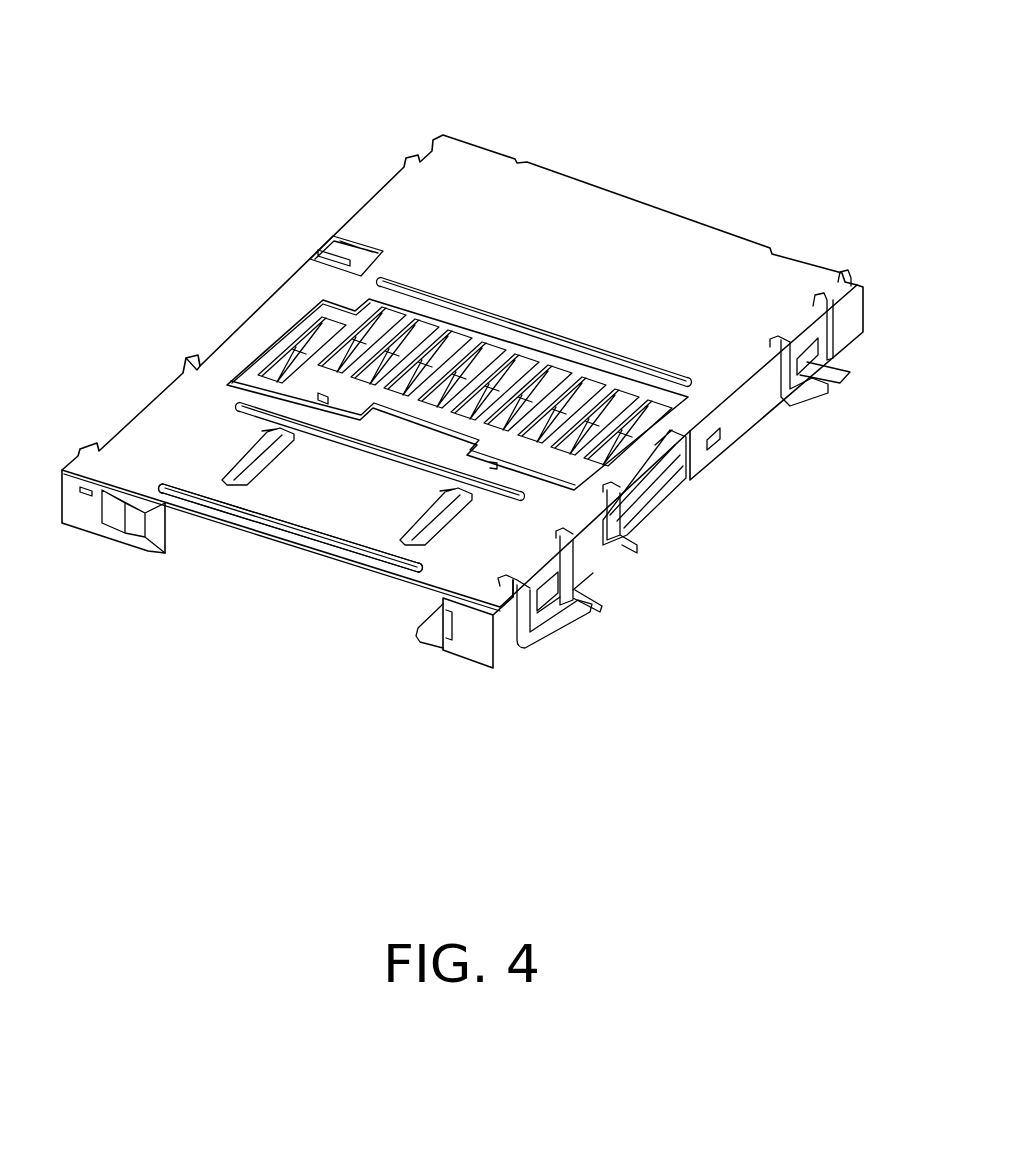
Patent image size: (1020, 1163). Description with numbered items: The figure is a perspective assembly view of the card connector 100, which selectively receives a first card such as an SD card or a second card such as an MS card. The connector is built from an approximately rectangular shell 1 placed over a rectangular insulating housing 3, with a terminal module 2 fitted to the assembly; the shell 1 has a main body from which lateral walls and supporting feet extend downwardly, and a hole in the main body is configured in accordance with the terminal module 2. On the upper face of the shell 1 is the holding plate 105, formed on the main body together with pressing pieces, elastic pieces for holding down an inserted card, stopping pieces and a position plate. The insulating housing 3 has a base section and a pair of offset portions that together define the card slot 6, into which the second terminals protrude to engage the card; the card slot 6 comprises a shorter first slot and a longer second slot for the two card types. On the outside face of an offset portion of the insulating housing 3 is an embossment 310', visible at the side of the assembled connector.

The card connector 100 is at (483, 50).
The shell 1 is at (595, 220).
The terminal module 2 is at (555, 467).
The insulating housing 3 is at (475, 637).
The card slot 6 is at (328, 583).
The holding plate 105 is at (432, 438).
The embossment 310' is at (831, 408).